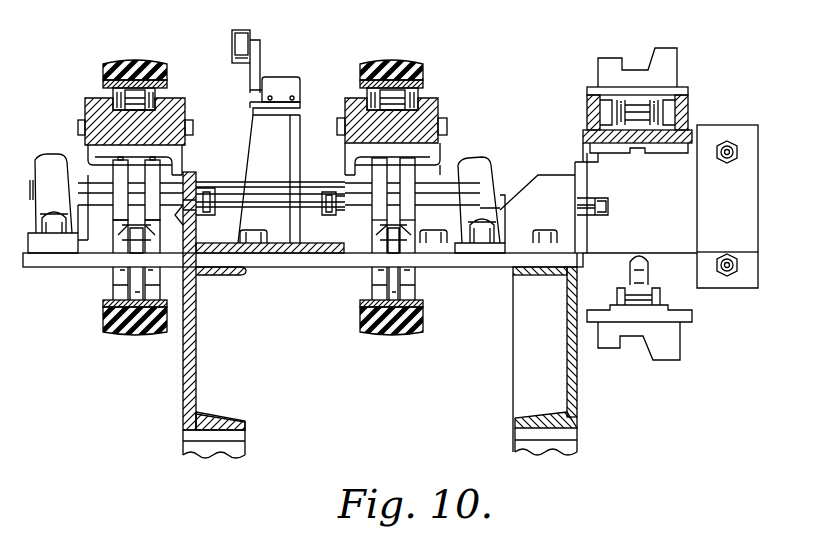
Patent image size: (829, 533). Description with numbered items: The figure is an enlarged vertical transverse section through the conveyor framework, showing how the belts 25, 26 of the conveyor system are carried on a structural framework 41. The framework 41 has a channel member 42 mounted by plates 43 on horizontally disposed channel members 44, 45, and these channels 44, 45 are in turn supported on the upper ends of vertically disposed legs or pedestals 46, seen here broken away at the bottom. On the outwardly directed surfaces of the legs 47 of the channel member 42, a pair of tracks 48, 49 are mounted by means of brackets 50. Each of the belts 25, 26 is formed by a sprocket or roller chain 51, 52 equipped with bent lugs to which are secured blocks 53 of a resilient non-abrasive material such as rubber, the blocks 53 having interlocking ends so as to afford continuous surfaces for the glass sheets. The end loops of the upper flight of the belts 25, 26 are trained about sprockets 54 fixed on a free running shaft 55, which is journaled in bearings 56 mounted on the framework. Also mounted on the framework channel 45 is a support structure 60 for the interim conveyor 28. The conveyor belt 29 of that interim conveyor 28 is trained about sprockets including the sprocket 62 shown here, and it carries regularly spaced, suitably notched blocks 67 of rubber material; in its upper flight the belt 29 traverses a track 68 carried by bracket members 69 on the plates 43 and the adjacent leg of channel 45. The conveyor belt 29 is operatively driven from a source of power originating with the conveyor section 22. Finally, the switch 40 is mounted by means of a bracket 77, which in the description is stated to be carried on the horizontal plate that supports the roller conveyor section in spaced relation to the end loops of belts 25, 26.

The conveyor section 22 is at (97, 50).
The belt 25 is at (105, 82).
The belt 26 is at (407, 185).
The interim conveyor 28 is at (703, 77).
The conveyor belt 29 is at (635, 113).
The switch 40 is at (276, 84).
The structural framework 41 is at (173, 380).
The channel member 42 is at (265, 253).
The plates 43 is at (306, 267).
The channel member 44 is at (183, 398).
The channel member 45 is at (576, 378).
The legs or pedestals 46 is at (185, 453).
The legs 47 is at (198, 188).
The track 48 is at (110, 125).
The track 49 is at (420, 125).
The brackets 50 is at (172, 158).
The sprocket or roller chain 51 is at (128, 100).
The sprocket or roller chain 52 is at (398, 105).
The blocks 53 is at (137, 60).
The sprockets 54 is at (135, 227).
The shaft 55 is at (252, 195).
The bearings 56 is at (50, 175).
The support structure 60 is at (664, 147).
The sprocket 62 is at (641, 258).
The blocks 67 is at (612, 75).
The track 68 is at (680, 120).
The bracket members 69 is at (582, 160).
The bracket 77 is at (268, 126).